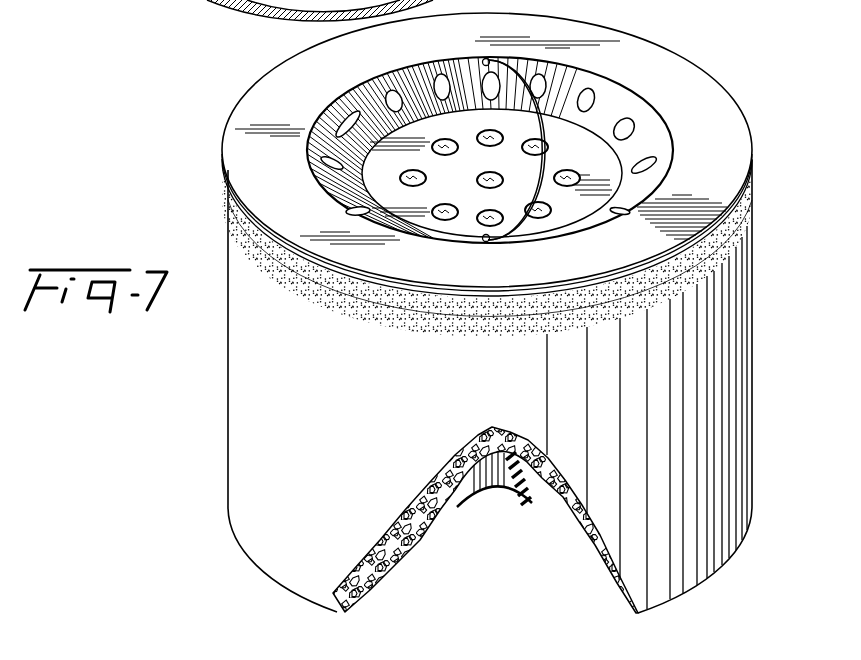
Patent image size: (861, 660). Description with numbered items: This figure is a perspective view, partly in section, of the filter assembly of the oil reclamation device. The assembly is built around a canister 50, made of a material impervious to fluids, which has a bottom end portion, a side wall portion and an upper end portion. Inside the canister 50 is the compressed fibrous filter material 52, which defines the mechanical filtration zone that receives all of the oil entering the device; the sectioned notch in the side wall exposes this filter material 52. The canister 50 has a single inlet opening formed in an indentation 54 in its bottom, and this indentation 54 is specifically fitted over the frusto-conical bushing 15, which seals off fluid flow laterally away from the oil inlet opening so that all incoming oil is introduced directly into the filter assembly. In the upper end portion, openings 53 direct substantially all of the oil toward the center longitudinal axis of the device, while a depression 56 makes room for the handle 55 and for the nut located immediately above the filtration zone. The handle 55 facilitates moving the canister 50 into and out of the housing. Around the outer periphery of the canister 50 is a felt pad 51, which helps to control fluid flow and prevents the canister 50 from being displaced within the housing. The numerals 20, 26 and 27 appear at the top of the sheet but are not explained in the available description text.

The frusto-conical bushing 15 is at (512, 487).
The canister 20 is at (141, 0).
The gasket ring 26 is at (246, 12).
The lid 27 is at (197, 0).
The canister 50 is at (233, 433).
The felt pad 51 is at (222, 200).
The compressed fibrous filter material 52 is at (398, 549).
The openings 53 is at (598, 167).
The indentation 54 is at (505, 468).
The handle 55 is at (532, 88).
The depression 56 is at (572, 176).